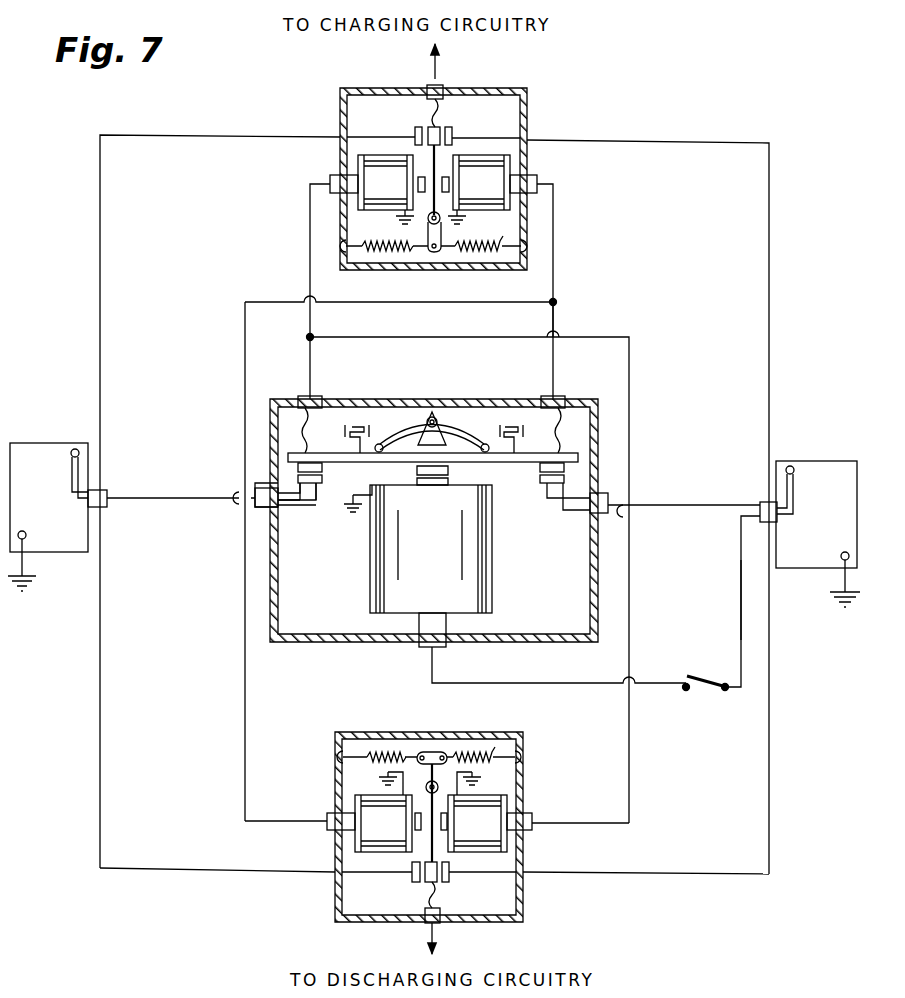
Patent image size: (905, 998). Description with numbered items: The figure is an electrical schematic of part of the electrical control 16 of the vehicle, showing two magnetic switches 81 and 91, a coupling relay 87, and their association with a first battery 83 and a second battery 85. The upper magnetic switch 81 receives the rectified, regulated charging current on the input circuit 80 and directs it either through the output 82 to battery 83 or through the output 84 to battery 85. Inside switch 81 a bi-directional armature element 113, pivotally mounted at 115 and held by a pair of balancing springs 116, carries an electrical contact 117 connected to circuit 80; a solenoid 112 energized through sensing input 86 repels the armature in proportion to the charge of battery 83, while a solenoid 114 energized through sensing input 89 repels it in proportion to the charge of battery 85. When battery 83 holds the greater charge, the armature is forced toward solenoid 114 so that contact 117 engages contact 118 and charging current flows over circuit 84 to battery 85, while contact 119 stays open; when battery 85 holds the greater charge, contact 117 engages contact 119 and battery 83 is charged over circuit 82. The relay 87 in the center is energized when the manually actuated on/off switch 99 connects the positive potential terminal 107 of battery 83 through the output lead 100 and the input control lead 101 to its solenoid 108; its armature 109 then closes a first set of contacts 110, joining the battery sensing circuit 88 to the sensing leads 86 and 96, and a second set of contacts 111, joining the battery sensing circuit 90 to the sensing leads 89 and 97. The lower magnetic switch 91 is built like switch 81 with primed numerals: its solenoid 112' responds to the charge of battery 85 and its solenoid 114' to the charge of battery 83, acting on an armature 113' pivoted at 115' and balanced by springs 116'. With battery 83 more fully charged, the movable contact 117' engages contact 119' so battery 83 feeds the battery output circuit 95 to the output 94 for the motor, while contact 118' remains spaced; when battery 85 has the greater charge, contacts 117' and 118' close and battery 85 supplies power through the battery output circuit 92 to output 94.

The electrical control 16 is at (782, 98).
The input circuit 80 is at (438, 68).
The magnetic switch 81 is at (527, 113).
The output circuit 82 is at (769, 205).
The first group of batteries 83 is at (840, 470).
The output circuit 84 is at (255, 135).
The second group of batteries 85 is at (52, 458).
The sensing input 86 is at (570, 242).
The coupling relay 87 is at (602, 402).
The battery sensing circuit 88 is at (726, 505).
The sensing input 89 is at (310, 213).
The battery sensing circuit 90 is at (203, 498).
The magnetic switch 91 is at (523, 764).
The battery output circuit 92 is at (204, 869).
The output 94 is at (438, 942).
The battery output circuit 95 is at (722, 875).
The sensing input 96 is at (294, 821).
The sensing input 97 is at (593, 823).
The on/off switch 99 is at (710, 678).
The output lead 100 is at (741, 584).
The input control lead 101 is at (557, 685).
The positive potential terminal 107 is at (741, 516).
The solenoid 108 is at (442, 559).
The armature 109 is at (515, 462).
The first set of contacts 110 is at (542, 490).
The second set of contacts 111 is at (328, 488).
The solenoid 112 is at (492, 189).
The bi-directional armature element 113 is at (464, 177).
The solenoid 114 is at (372, 189).
The pivot 115 is at (409, 254).
The balancing springs 116 is at (424, 266).
The electrical contact 117 is at (465, 120).
The contact 118 is at (384, 122).
The contact 119 is at (482, 131).
The solenoid 112' is at (490, 823).
The armature 113' is at (401, 843).
The solenoid 114' is at (369, 823).
The pivot 115' is at (432, 807).
The balancing springs 116' is at (429, 732).
The movable contact 117' is at (403, 887).
The contact 118' is at (381, 878).
The contact 119' is at (479, 878).